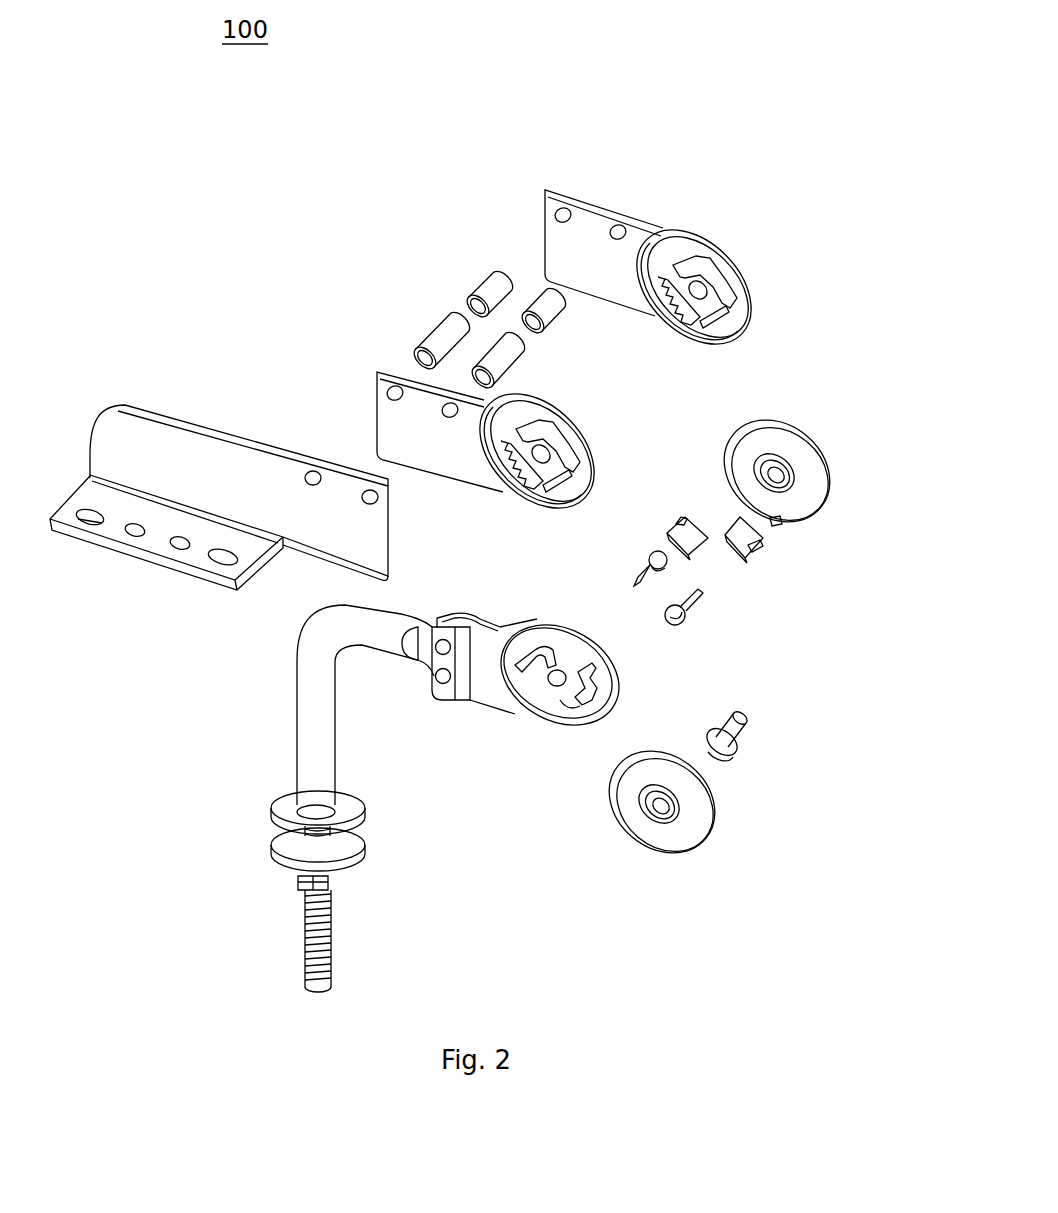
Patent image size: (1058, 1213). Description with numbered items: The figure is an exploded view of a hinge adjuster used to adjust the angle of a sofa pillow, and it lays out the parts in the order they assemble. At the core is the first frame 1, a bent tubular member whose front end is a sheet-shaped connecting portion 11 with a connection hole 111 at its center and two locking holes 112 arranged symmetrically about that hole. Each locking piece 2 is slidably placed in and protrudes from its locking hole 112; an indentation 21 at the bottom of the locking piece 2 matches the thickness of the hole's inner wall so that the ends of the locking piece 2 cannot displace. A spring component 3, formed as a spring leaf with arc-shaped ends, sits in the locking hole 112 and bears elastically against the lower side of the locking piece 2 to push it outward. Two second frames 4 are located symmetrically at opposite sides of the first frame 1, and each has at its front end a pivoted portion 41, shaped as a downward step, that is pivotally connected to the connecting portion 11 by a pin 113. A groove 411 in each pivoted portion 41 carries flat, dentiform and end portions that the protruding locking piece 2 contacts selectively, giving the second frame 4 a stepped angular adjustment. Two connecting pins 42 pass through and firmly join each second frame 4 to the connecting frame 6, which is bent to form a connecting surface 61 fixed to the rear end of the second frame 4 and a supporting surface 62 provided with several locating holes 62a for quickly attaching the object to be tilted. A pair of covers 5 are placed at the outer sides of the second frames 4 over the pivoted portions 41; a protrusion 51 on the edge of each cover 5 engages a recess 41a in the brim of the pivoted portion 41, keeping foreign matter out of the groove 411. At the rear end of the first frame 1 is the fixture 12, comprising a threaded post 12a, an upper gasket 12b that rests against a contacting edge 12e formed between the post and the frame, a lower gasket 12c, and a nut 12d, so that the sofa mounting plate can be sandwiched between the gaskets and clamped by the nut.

The first frame 1 is at (466, 712).
The connecting portion 11 is at (528, 704).
The connection hole 111 is at (557, 687).
The locking hole 112 is at (530, 677).
The pin 113 is at (735, 745).
The fixture 12 is at (247, 890).
The threaded post 12a is at (253, 966).
The upper gasket 12b is at (276, 830).
The lower gasket 12c is at (282, 870).
The nut 12d is at (303, 900).
The contacting edge 12e is at (312, 812).
The locking piece 2 is at (727, 543).
The indentation 21 is at (676, 520).
The spring component 3 is at (633, 582).
The second frame 4 is at (628, 287).
The pivoted portion 41 is at (636, 387).
The groove 411 is at (717, 275).
The recess 41a is at (688, 328).
The connecting pin 42 is at (552, 308).
The cover 5 is at (724, 653).
The protrusion 51 is at (777, 523).
The connecting frame 6 is at (215, 549).
The connecting surface 61 is at (162, 567).
The supporting surface 62 is at (226, 490).
The locating hole 62a is at (95, 520).